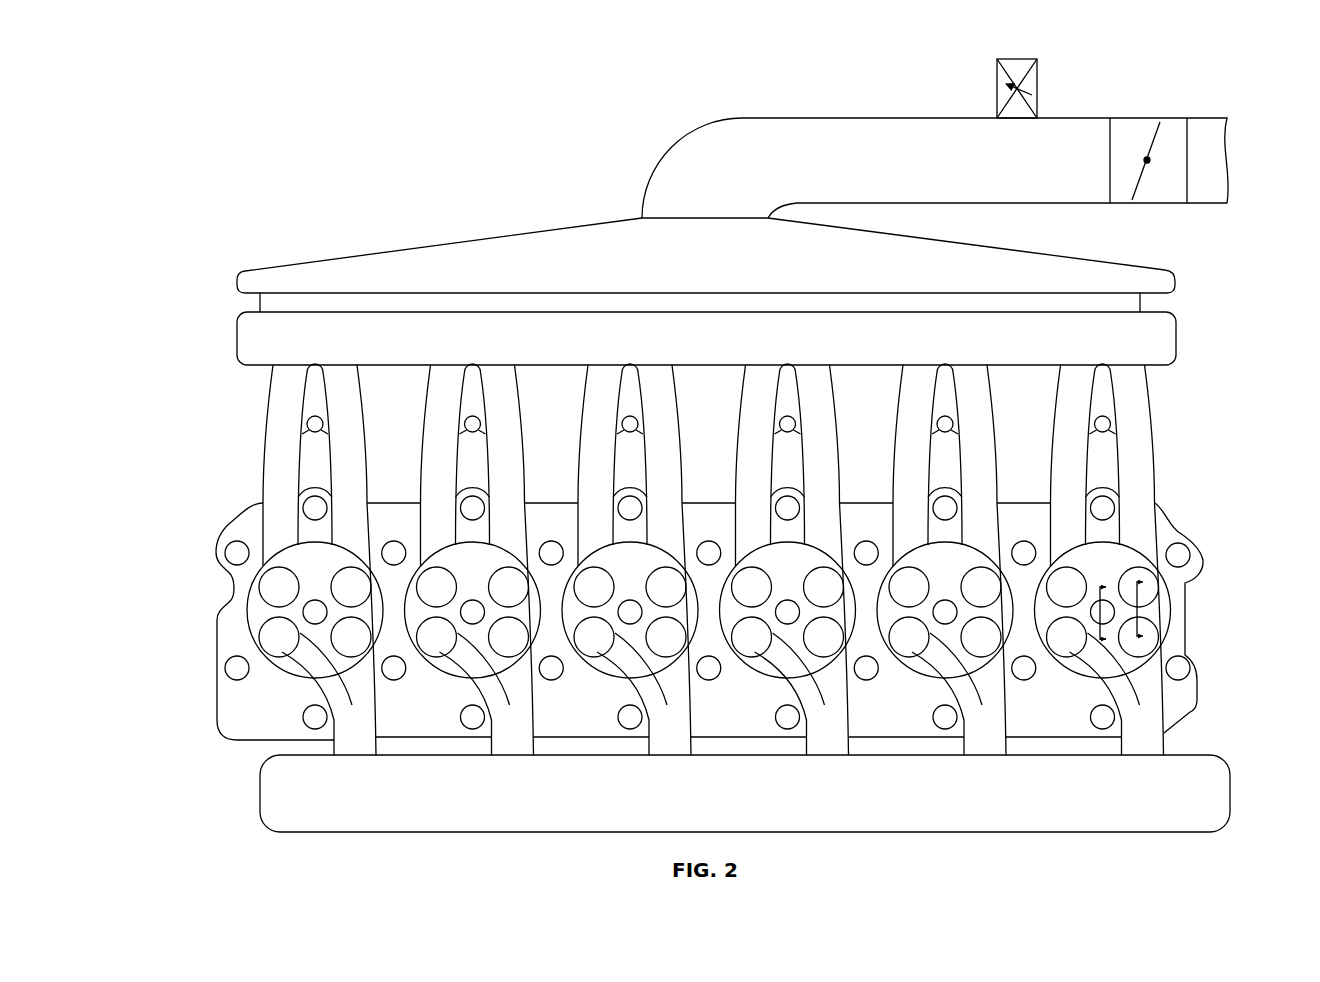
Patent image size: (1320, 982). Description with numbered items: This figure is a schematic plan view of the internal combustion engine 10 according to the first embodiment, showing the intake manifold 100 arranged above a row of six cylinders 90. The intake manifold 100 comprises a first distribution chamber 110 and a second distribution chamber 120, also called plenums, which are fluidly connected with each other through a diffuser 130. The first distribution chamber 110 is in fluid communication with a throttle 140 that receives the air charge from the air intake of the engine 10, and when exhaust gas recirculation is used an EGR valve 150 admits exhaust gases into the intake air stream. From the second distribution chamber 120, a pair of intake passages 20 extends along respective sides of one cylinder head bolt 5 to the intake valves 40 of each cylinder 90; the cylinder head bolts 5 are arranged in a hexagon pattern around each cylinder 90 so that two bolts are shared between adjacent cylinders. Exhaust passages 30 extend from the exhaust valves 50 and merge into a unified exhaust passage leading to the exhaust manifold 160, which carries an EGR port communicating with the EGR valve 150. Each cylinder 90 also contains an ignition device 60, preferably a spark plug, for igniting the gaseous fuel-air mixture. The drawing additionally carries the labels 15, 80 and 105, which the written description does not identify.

The engine 10 is at (145, 184).
The heat exchanger core 15 is at (203, 358).
The intake passages 20 is at (263, 449).
The exhaust passages 30 is at (323, 693).
The intake valves 40 is at (709, 587).
The exhaust valves 50 is at (709, 637).
The ignition device 60 is at (709, 612).
The slot channel 80 is at (709, 445).
The cylinder 90 is at (709, 610).
The cylinder head bolt 5 is at (707, 608).
The intake manifold 100 is at (441, 238).
The duct 105 is at (685, 218).
The first distribution chamber 110 is at (665, 267).
The second distribution chamber 120 is at (665, 345).
The diffuser 130 is at (1140, 298).
The throttle 140 is at (1110, 165).
The EGR valve 150 is at (997, 93).
The exhaust manifold 160 is at (260, 790).